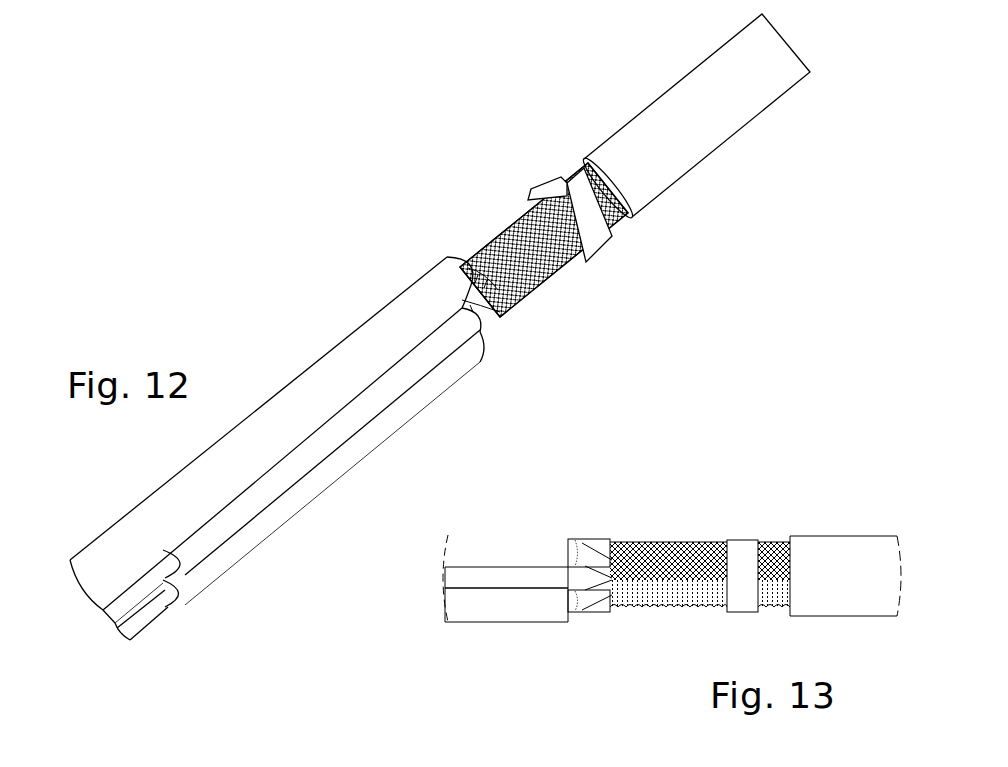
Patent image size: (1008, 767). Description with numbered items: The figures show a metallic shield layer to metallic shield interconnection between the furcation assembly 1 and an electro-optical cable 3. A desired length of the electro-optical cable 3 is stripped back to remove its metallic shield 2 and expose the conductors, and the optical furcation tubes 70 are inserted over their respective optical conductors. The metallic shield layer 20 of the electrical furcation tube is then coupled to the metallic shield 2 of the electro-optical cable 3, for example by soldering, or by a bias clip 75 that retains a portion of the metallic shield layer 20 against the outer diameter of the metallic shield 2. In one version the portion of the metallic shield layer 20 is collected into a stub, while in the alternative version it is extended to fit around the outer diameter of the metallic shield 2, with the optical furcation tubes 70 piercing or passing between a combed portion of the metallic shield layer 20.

In FIG. 12, the furcation assembly 1 is at (373, 340).
In FIG. 13, the furcation assembly 1 is at (548, 578).
In FIG. 12, the metallic shield 2 is at (598, 163).
In FIG. 13, the metallic shield 2 is at (673, 598).
In FIG. 12, the electro-optical cable 3 is at (713, 118).
In FIG. 13, the electro-optical cable 3 is at (852, 564).
In FIG. 12, the metallic shield layer 20 is at (518, 227).
In FIG. 12, the optical furcation tubes 70 is at (305, 497).
In FIG. 13, the optical furcation tubes 70 is at (498, 552).
In FIG. 12, the bias clip 75 is at (593, 222).
In FIG. 13, the bias clip 75 is at (743, 557).